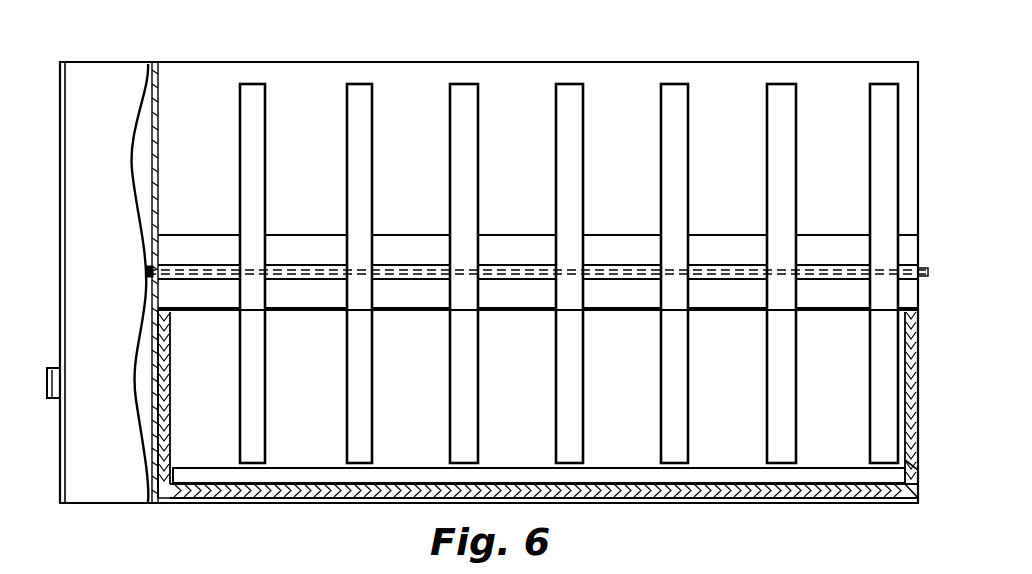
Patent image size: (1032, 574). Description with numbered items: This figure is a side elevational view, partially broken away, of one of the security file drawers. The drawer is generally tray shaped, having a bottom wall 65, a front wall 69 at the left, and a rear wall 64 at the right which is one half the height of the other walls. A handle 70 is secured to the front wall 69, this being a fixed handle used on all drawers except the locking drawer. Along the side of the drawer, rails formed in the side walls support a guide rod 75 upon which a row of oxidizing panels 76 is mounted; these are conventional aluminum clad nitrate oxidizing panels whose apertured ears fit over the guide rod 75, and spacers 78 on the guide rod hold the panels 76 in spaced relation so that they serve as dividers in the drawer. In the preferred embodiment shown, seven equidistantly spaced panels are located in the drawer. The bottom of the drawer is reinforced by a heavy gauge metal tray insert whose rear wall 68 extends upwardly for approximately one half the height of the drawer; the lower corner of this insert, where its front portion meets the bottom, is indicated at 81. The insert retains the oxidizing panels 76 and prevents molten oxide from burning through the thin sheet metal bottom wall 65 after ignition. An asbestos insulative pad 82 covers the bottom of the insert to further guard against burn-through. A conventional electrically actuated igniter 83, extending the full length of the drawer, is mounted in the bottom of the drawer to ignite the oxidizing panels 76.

The front wall 69 is at (97, 30).
The handle 70 is at (52, 368).
The guide rod 75 is at (201, 270).
The oxidizing panels 76 is at (240, 116).
The spacers 78 is at (312, 268).
The rear wall 64 is at (920, 343).
The bottom wall 65 is at (264, 498).
The left side wall 81 is at (182, 498).
The asbestos insulative pad 82 is at (336, 486).
The igniter 83 is at (733, 472).
The rear wall of tray 68 is at (910, 460).